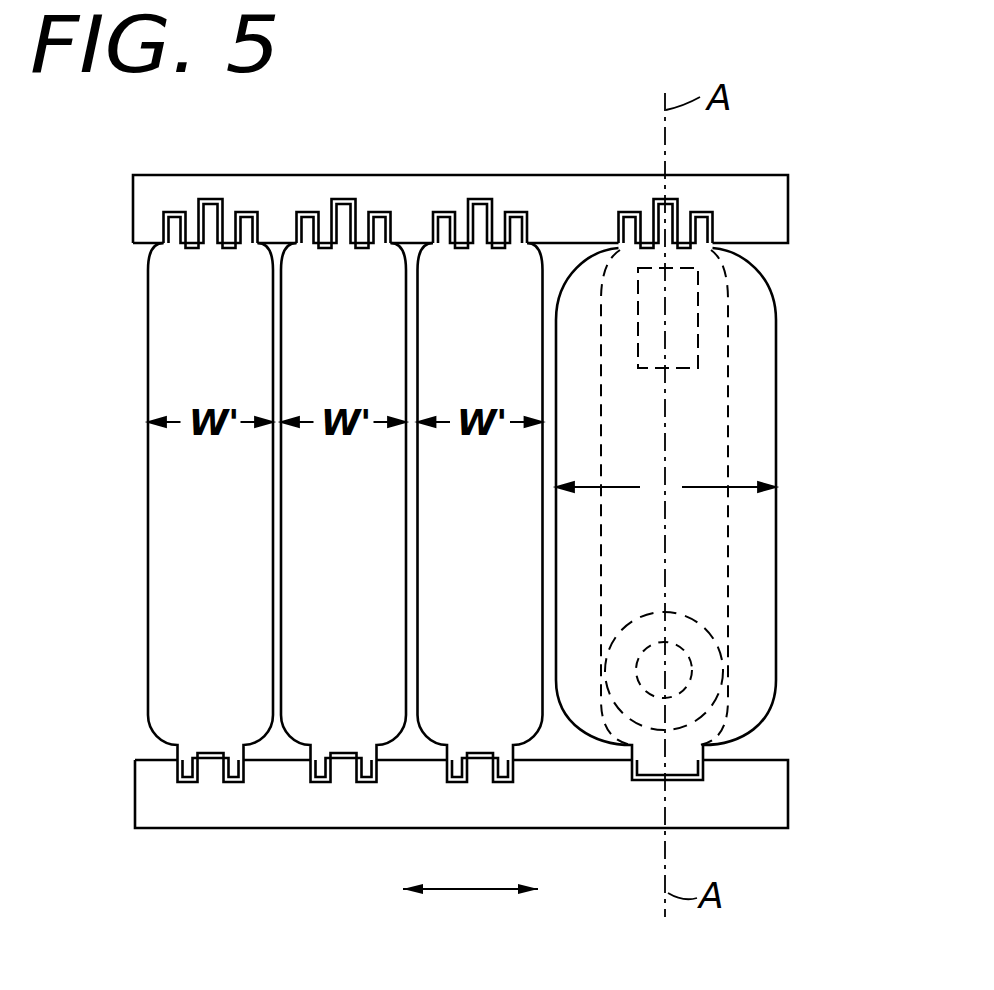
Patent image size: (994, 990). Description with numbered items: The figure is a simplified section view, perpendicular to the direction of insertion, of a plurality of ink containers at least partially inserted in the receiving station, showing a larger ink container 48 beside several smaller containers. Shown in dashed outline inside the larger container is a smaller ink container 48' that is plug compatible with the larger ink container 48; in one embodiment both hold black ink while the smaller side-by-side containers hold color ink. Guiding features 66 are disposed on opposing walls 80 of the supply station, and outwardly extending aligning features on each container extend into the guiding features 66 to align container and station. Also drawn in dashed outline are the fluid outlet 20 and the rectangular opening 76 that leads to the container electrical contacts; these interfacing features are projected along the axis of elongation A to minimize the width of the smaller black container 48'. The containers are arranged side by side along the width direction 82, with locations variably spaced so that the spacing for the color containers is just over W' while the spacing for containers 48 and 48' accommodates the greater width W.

The fluid outlet 20 is at (665, 665).
The larger ink container 48 is at (707, 514).
The smaller ink container 48' is at (737, 497).
The guiding features 66 is at (712, 845).
The rectangular opening 76 is at (677, 331).
The opposing walls 80 is at (806, 737).
The width direction arrow 82 is at (463, 923).